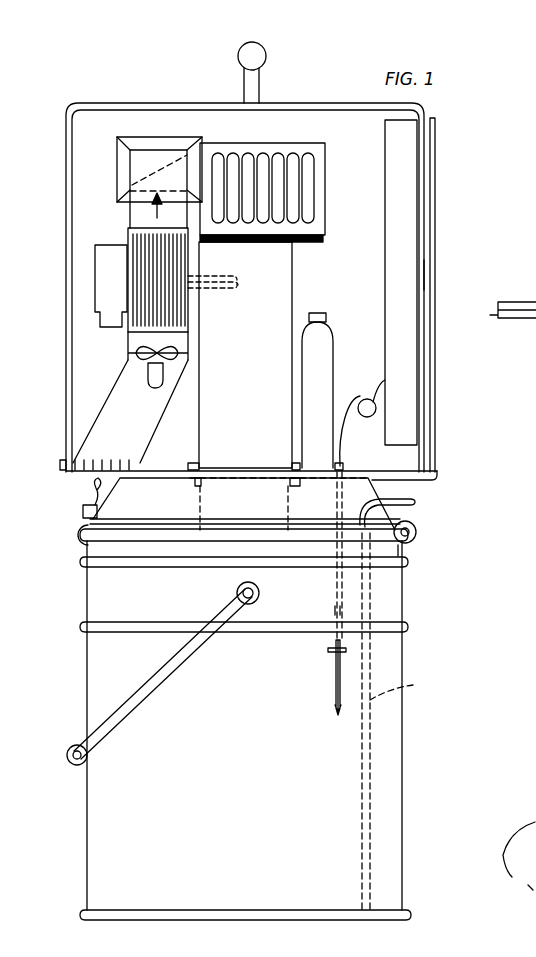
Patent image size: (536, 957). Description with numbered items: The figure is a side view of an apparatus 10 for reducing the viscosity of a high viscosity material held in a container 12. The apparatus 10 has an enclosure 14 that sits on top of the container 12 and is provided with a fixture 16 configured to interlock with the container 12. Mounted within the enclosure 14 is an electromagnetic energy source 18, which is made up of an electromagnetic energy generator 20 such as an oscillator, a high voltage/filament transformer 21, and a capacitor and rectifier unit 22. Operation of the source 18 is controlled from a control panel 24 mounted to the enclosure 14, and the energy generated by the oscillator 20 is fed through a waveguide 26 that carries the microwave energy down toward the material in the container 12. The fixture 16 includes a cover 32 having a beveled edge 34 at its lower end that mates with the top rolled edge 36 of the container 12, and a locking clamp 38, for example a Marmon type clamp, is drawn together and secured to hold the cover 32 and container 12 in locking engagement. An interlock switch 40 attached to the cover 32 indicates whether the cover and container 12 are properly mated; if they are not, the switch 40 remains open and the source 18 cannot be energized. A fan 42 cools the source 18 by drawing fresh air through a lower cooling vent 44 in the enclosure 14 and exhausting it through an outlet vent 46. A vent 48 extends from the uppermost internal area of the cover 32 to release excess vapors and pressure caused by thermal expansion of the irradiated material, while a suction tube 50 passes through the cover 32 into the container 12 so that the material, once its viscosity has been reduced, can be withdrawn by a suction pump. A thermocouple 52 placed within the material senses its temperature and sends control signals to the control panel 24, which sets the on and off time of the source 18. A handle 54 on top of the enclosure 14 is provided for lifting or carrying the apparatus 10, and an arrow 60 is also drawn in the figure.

The apparatus 10 is at (445, 272).
The container 12 is at (405, 795).
The enclosure 14 is at (430, 408).
The fixture 16 is at (436, 508).
The electromagnetic energy source 18 is at (102, 297).
The electromagnetic energy generator 20 is at (140, 250).
The high voltage/filament transformer 21 is at (270, 148).
The capacitor and rectifier unit 22 is at (330, 362).
The control panel 24 is at (433, 190).
The waveguide 26 is at (278, 300).
The cover 32 is at (80, 548).
The beveled edge 34 is at (415, 520).
The top edge 36 is at (404, 566).
The locking clamp 38 is at (414, 542).
The interlock switch 40 is at (78, 522).
The fan 42 is at (158, 378).
The lower cooling vent 44 is at (72, 480).
The outlet vent 46 is at (148, 160).
The vent 48 is at (437, 476).
The suction tube 50 is at (389, 645).
The thermocouple 52 is at (330, 690).
The handle 54 is at (239, 54).
The direction arrow 60 is at (513, 662).